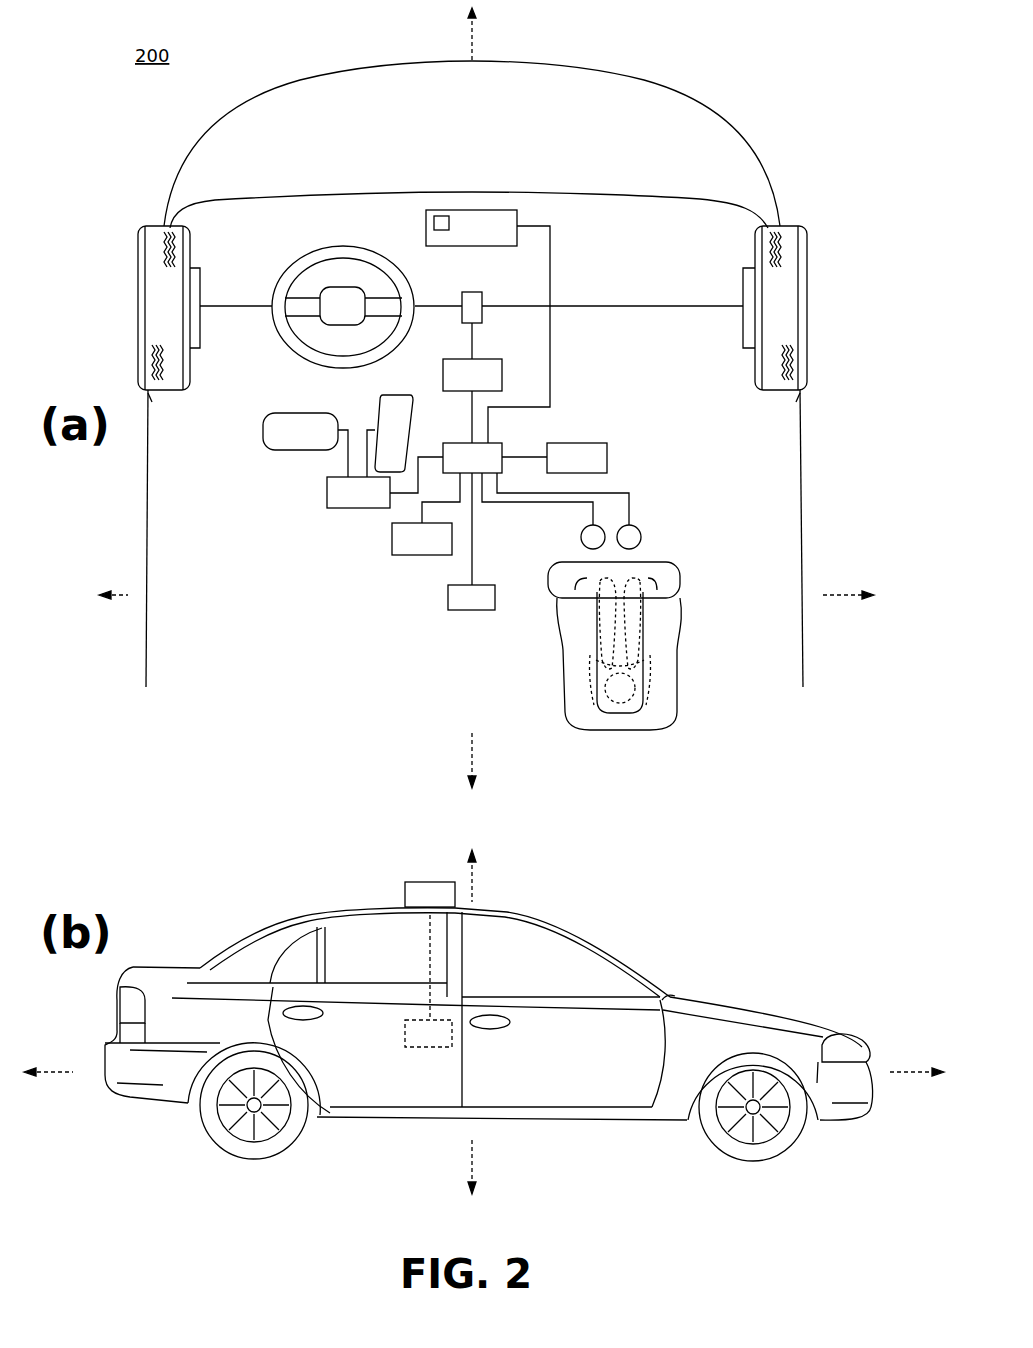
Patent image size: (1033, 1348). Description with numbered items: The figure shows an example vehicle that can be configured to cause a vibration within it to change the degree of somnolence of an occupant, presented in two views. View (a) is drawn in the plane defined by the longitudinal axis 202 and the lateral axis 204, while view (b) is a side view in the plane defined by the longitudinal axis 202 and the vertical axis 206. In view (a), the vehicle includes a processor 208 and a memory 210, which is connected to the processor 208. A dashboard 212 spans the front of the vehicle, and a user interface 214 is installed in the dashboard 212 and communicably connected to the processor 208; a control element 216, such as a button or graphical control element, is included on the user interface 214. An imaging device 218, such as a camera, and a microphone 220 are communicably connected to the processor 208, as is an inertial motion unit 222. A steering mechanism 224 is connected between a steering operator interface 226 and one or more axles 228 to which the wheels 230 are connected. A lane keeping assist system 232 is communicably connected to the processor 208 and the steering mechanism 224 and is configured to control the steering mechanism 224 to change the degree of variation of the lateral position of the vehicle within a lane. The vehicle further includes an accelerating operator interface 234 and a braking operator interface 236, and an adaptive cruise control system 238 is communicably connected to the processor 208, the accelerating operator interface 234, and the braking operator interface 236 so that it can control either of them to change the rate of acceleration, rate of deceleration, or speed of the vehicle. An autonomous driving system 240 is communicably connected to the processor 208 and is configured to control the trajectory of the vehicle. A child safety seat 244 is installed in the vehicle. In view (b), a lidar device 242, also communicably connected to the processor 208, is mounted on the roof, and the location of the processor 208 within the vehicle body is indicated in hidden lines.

The longitudinal axis 202 is at (477, 42).
The lateral axis 204 is at (110, 590).
The vertical axis 206 is at (477, 893).
The processor 208 is at (502, 450).
The memory 210 is at (607, 457).
The dashboard 212 is at (638, 218).
The user interface 214 is at (483, 220).
The control element 216 is at (440, 216).
The imaging device 218 is at (581, 537).
The microphone 220 is at (641, 537).
The inertial motion unit (IMU) 222 is at (420, 555).
The steering mechanism 224 is at (474, 292).
The steering operator interface 226 is at (335, 246).
The axles 228 is at (225, 306).
The wheels 230 is at (138, 243).
The lane keeping assist (LKA) system 232 is at (490, 359).
The accelerating operator interface 234 is at (398, 400).
The braking operator interface 236 is at (287, 420).
The adaptive cruise control (ACC) system 238 is at (357, 508).
The autonomous driving system 240 is at (472, 610).
The lidar device 242 is at (405, 888).
The child safety seat 244 is at (680, 670).